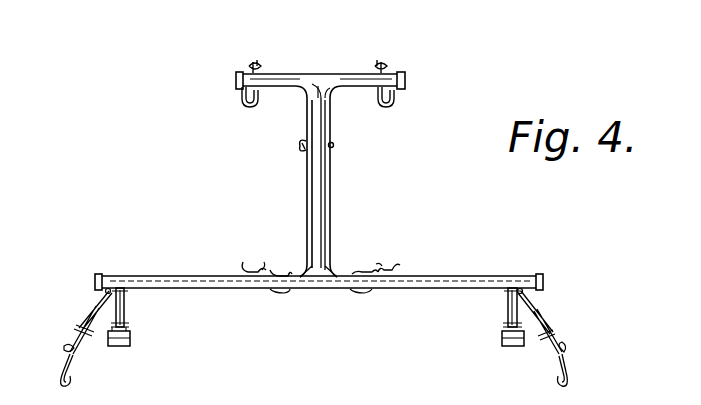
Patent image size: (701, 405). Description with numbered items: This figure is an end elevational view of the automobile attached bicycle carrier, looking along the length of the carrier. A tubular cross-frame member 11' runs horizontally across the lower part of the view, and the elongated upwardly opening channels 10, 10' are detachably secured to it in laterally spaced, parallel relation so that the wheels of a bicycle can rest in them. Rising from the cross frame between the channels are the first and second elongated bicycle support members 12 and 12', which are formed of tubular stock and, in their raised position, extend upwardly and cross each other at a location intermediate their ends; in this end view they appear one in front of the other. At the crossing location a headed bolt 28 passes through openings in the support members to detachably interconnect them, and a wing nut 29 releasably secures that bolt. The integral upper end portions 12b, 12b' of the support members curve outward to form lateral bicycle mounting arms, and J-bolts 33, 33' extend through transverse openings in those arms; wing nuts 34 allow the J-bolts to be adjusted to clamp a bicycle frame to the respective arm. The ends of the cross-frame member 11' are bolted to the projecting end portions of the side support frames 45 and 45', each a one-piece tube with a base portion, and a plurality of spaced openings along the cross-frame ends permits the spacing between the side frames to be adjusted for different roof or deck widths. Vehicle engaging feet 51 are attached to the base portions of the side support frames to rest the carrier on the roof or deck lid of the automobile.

The upwardly opening channel 10 is at (405, 260).
The upwardly opening channel 10' is at (242, 261).
The cross-frame member 11' is at (319, 265).
The first elongated bicycle support member 12 is at (340, 180).
The second elongated bicycle support member 12' is at (298, 181).
The upper end portion 12b is at (277, 65).
The upper end portion 12b' is at (361, 63).
The headed bolt 28 is at (334, 144).
The wing nut 29 is at (303, 150).
The J-bolt 33 is at (233, 111).
The J-bolt 33' is at (407, 103).
The wing nut 34 is at (250, 62).
The side support frame 45 is at (484, 317).
The side support frame 45' is at (152, 307).
The vehicle engaging foot 51 is at (131, 338).